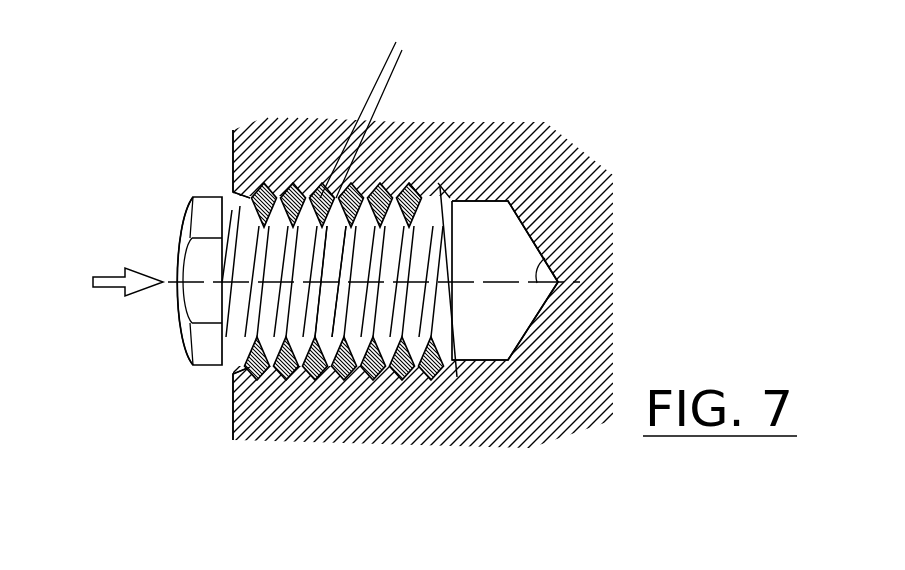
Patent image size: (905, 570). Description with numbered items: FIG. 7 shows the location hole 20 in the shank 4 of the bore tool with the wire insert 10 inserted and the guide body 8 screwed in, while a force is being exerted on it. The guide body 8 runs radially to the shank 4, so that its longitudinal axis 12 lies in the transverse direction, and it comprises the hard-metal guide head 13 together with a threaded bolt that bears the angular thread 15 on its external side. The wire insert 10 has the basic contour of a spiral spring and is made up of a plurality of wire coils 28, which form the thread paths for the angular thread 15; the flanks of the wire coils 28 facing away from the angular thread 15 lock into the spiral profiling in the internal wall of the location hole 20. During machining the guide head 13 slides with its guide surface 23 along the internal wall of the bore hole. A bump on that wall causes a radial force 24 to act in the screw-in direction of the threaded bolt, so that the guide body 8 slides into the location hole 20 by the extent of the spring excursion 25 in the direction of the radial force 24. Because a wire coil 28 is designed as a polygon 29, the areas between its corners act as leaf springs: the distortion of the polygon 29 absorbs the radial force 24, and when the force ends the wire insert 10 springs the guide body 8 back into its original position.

The shank 4 is at (517, 433).
The guide body 8 is at (394, 305).
The wire insert 10 is at (232, 376).
The longitudinal axis of the guide body 12 is at (424, 186).
The guide head 13 is at (204, 218).
The angular thread 15 is at (440, 186).
The location hole 20 is at (232, 187).
The guide surface 23 is at (180, 295).
The radial force 24 is at (112, 273).
The spring excursion 25 is at (340, 65).
The wire coil 28 is at (281, 185).
The polygon 29 is at (338, 190).